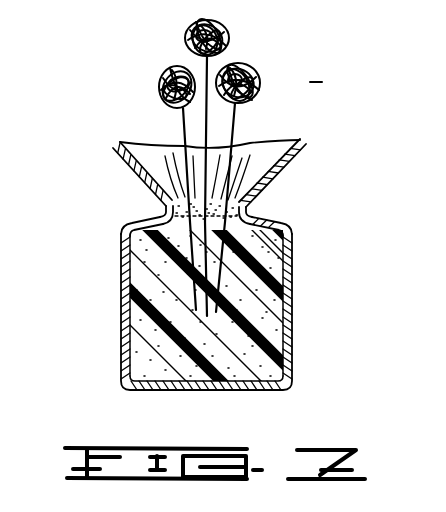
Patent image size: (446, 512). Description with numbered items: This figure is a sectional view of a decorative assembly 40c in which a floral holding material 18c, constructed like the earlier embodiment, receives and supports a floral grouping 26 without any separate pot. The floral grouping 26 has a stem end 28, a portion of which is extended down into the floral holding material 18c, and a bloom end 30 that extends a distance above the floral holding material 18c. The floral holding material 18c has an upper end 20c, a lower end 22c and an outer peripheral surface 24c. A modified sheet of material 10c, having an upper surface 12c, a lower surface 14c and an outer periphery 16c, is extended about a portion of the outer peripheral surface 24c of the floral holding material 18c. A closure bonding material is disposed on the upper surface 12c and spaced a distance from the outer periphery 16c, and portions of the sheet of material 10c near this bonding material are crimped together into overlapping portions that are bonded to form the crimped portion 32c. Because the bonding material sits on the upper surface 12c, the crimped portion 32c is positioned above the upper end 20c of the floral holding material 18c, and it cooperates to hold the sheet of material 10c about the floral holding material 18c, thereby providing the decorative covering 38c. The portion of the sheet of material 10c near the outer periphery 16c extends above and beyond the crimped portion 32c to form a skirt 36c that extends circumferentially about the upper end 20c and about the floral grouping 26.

The sheet of material 10c is at (300, 283).
The upper surface 12c is at (286, 305).
The lower surface 14c is at (293, 256).
The outer periphery 16c is at (303, 148).
The floral holding material 18c is at (136, 302).
The upper end 20c is at (145, 220).
The lower end 22c is at (222, 388).
The outer peripheral surface 24c is at (291, 327).
The floral grouping 26 is at (172, 108).
The stem end 28 is at (178, 265).
The bloom end 30 is at (243, 54).
The crimped portion 32c is at (126, 144).
The skirt 36c is at (292, 164).
The decorative covering 38c is at (120, 342).
The decorative assembly 40c is at (308, 208).